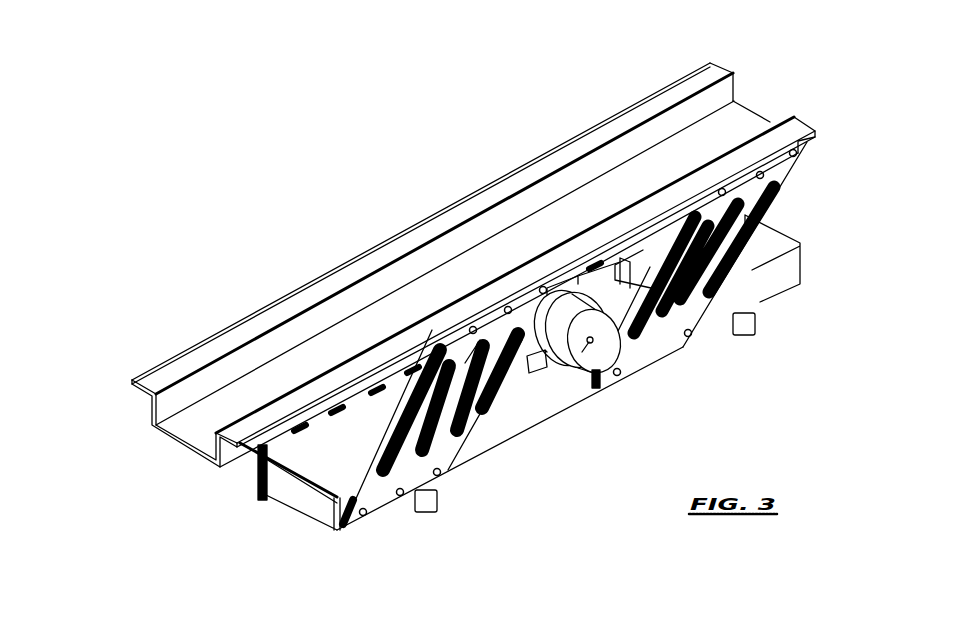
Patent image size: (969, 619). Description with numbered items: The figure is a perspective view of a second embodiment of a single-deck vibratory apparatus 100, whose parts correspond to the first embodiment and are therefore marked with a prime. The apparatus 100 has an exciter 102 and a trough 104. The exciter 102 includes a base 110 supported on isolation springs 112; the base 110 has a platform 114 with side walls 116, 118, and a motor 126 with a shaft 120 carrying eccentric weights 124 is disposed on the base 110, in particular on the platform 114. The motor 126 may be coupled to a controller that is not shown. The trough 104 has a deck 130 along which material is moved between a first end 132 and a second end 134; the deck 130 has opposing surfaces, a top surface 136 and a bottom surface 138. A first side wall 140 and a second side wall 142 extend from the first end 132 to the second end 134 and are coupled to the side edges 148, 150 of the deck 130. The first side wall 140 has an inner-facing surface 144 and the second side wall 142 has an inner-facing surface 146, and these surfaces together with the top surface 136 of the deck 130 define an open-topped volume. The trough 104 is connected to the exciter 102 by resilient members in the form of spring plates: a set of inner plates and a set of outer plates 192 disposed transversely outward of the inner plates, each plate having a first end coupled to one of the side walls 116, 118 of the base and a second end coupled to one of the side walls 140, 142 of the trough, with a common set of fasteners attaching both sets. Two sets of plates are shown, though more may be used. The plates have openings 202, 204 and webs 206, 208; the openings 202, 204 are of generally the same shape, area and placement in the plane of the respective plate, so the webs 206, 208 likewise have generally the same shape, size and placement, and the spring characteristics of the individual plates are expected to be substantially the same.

The apparatus 100 is at (410, 186).
The exciter 102 is at (583, 389).
The trough 104 is at (665, 83).
The base 110 is at (270, 498).
The isolation springs 112 is at (426, 504).
The platform 114 is at (312, 500).
The side wall 116 is at (340, 537).
The side wall 118 is at (289, 482).
The shaft 120 is at (596, 344).
The eccentric weights 124 is at (610, 360).
The motor 126 is at (564, 372).
The deck 130 is at (195, 433).
The first end 132 is at (770, 97).
The second end 134 is at (132, 349).
The top surface 136 is at (184, 441).
The bottom surface 138 is at (183, 461).
The first side wall 140 is at (312, 312).
The second side wall 142 is at (212, 355).
The inner-facing surface 144 is at (318, 369).
The inner-facing surface 146 is at (258, 340).
The side edge 148 is at (218, 462).
The side edge 150 is at (148, 425).
The outer plates 192 is at (440, 477).
The openings 202 is at (485, 418).
The openings 204 is at (463, 432).
The webs 206 is at (373, 453).
The webs 208 is at (382, 433).